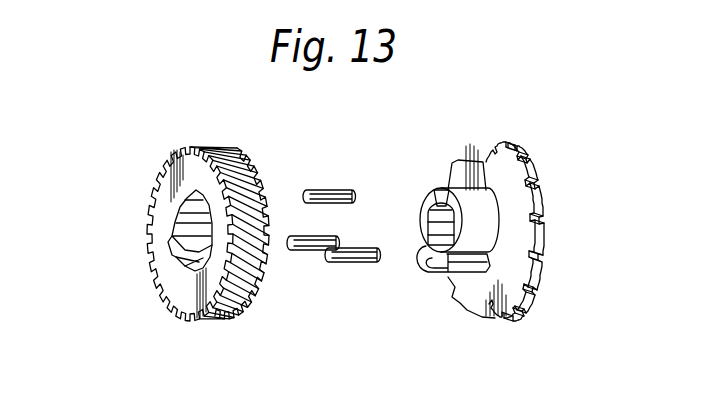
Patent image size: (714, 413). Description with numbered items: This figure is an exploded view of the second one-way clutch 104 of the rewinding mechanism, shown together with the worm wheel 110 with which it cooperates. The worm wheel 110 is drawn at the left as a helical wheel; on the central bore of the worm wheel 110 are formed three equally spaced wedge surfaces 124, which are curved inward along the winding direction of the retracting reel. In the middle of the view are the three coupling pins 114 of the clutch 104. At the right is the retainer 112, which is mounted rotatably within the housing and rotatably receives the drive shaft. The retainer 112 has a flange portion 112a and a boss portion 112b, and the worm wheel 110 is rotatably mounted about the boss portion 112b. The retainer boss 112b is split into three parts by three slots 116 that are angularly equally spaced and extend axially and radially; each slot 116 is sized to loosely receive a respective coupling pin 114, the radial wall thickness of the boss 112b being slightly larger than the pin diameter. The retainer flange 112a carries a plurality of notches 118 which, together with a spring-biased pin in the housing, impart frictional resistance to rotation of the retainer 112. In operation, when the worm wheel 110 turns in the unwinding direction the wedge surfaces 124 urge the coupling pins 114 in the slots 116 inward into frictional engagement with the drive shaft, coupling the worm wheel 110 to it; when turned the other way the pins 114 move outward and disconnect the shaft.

The second one-way clutch 104 is at (358, 344).
The worm wheel 110 is at (193, 170).
The retainer 112 is at (510, 232).
The flange portion 112a is at (544, 230).
The boss portion 112b is at (476, 205).
The coupling pins 114 is at (325, 192).
The slots 116 is at (437, 190).
The notches 118 is at (523, 172).
The wedge surfaces 124 is at (195, 193).